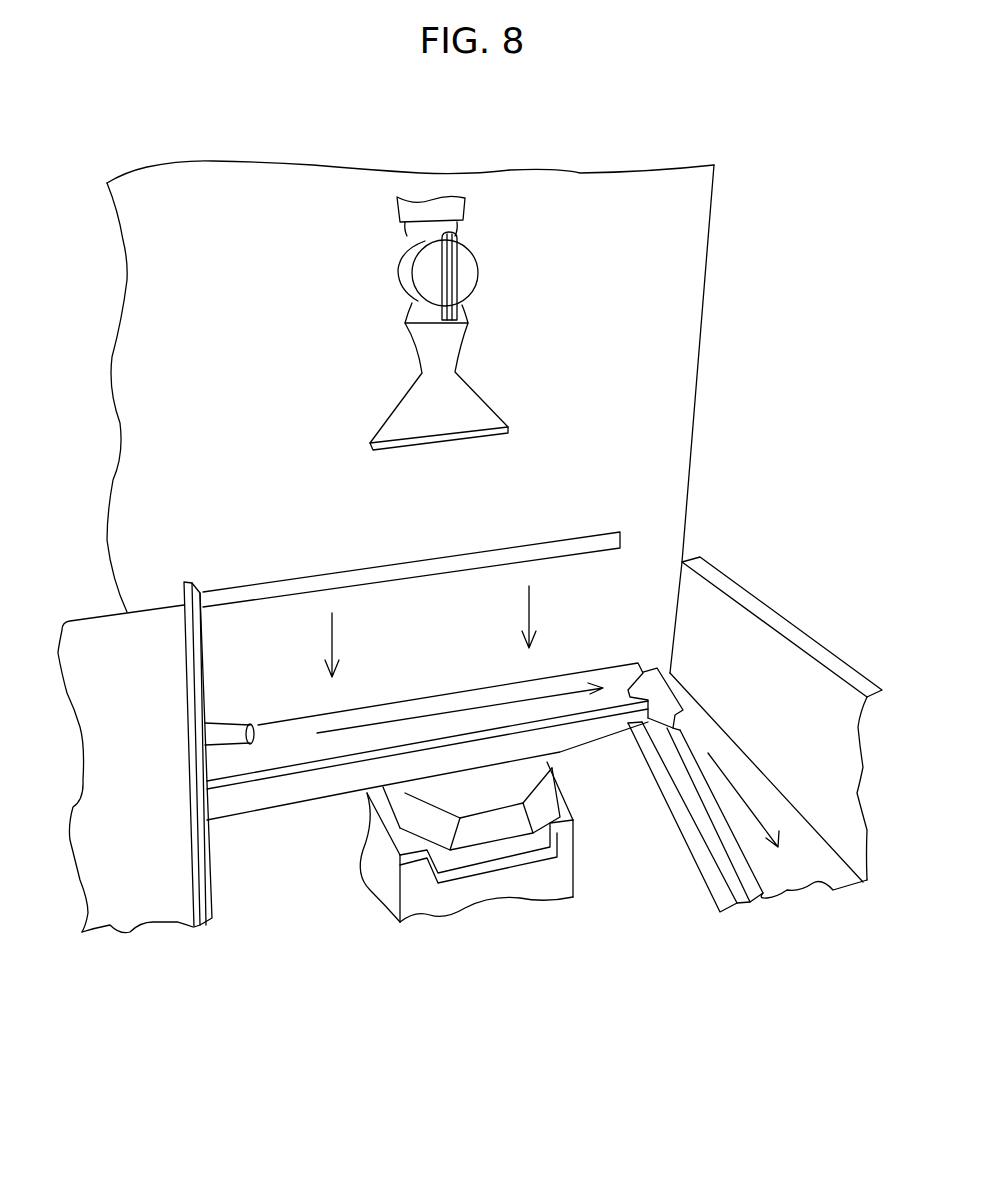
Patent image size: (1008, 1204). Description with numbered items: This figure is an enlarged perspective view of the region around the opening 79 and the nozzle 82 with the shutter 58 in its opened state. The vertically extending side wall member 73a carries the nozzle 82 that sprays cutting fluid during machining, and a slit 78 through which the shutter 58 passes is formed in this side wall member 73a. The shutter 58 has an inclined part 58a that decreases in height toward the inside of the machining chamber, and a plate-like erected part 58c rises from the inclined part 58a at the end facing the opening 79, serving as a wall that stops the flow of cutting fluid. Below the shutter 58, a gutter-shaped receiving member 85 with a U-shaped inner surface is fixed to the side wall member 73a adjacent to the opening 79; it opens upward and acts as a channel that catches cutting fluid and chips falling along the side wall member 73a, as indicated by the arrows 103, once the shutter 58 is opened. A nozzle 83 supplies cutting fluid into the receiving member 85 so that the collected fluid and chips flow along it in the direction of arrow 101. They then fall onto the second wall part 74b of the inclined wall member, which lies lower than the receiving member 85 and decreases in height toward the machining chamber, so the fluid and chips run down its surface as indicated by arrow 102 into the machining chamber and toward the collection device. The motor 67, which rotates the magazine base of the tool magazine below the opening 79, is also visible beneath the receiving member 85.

The shutter 58 is at (82, 1003).
The inclined part 58a is at (108, 900).
The erected part 58c is at (178, 907).
The motor 67 is at (470, 798).
The side wall member 73a is at (650, 408).
The second wall part 74b is at (813, 870).
The slit 78 is at (597, 533).
The opening 79 is at (717, 883).
The nozzle 82 is at (453, 397).
The nozzle 83 is at (230, 733).
The receiving member 85 is at (313, 785).
The arrow 101 is at (553, 697).
The arrow 102 is at (737, 787).
The arrows 103 is at (330, 633).